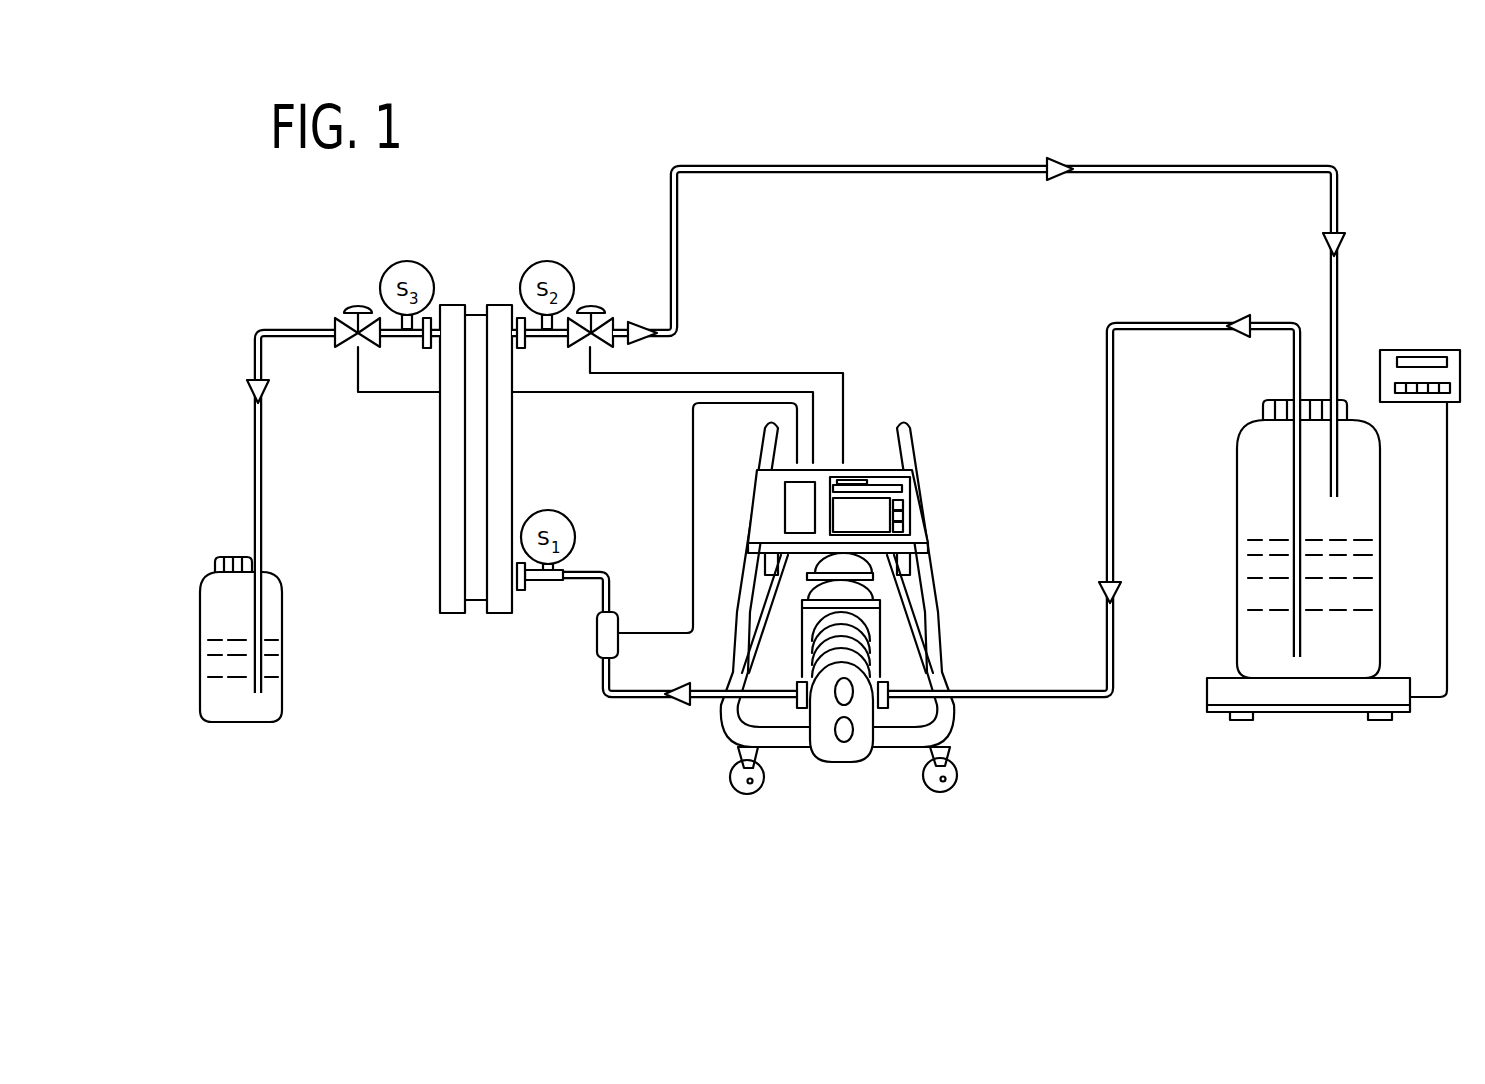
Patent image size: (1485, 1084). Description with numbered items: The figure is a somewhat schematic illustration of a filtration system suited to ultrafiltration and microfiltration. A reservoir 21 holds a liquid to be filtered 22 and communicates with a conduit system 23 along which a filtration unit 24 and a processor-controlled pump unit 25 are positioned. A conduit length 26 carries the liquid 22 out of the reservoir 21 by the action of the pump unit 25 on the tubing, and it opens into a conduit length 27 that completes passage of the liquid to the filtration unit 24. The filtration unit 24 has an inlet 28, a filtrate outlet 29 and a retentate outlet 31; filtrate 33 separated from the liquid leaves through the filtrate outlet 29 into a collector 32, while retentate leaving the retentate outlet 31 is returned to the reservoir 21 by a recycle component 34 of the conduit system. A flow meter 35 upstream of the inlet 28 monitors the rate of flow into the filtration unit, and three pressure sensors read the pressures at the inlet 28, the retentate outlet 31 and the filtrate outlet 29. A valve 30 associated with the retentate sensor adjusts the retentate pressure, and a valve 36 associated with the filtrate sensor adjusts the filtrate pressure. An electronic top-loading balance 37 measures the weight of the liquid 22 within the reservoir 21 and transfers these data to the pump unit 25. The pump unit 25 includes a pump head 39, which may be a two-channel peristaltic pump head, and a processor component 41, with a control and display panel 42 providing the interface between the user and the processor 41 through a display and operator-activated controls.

The reservoir 21 is at (1382, 463).
The liquid to be filtered 22 is at (1357, 597).
The conduit system 23 is at (1303, 167).
The filtration unit 24 is at (512, 453).
The processor-controlled pump unit 25 is at (943, 593).
The conduit length 26 is at (1115, 451).
The conduit length 27 is at (633, 698).
The inlet 28 is at (512, 600).
The filtrate outlet 29 is at (433, 340).
The valve 30 is at (595, 303).
The retentate outlet 31 is at (514, 340).
The collector 32 is at (280, 592).
The filtrate 33 is at (282, 662).
The recycle component 34 is at (995, 167).
The flow meter 35 is at (597, 645).
The valve 36 is at (358, 303).
The electronic top-loading balance 37 is at (1215, 690).
The pump head 39 is at (827, 740).
The processor component 41 is at (863, 480).
The control and display panel 42 is at (907, 498).